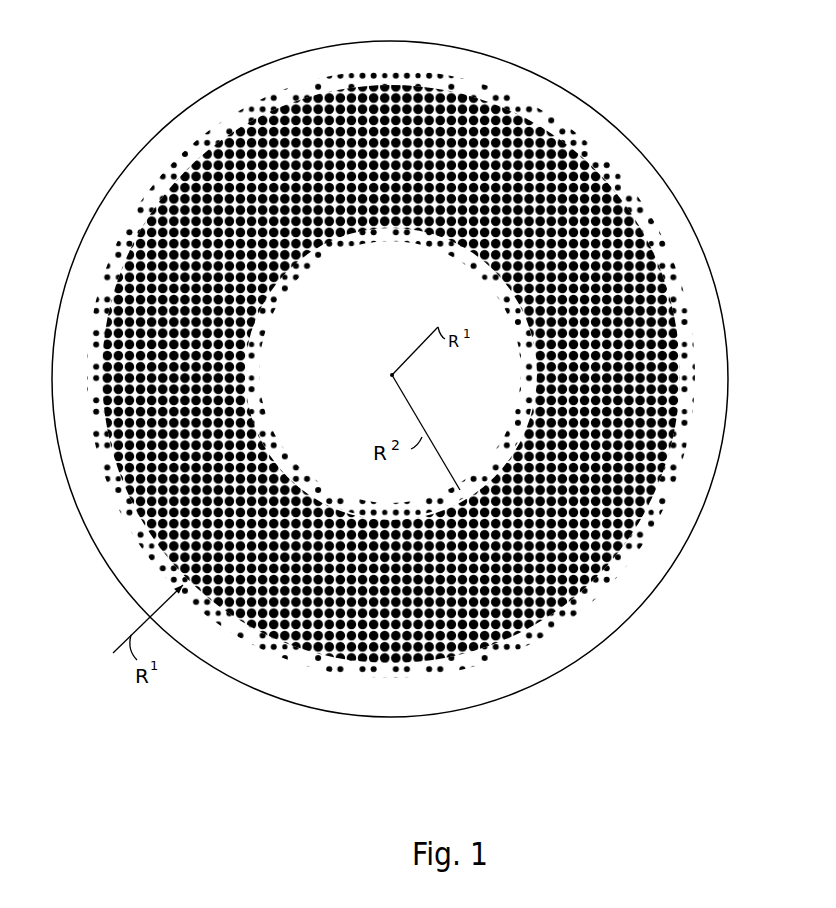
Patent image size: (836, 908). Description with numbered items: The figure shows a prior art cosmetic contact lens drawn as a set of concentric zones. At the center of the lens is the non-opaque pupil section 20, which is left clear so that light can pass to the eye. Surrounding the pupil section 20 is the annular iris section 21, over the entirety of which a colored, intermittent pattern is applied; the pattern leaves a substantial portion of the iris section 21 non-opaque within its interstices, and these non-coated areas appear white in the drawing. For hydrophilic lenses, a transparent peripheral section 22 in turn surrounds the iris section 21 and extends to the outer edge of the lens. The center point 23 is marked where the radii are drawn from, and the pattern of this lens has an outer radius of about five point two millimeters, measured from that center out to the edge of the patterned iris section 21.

The pupil section 20 is at (403, 326).
The iris section 21 is at (257, 633).
The peripheral section 22 is at (131, 541).
The center of lens 23 is at (392, 375).